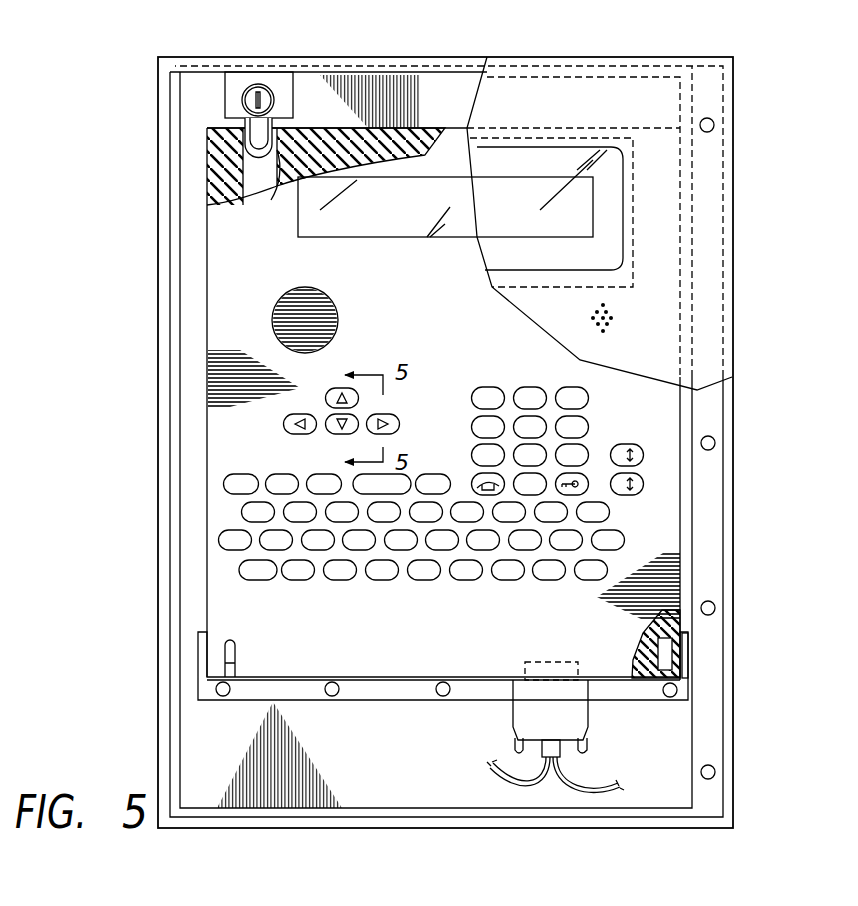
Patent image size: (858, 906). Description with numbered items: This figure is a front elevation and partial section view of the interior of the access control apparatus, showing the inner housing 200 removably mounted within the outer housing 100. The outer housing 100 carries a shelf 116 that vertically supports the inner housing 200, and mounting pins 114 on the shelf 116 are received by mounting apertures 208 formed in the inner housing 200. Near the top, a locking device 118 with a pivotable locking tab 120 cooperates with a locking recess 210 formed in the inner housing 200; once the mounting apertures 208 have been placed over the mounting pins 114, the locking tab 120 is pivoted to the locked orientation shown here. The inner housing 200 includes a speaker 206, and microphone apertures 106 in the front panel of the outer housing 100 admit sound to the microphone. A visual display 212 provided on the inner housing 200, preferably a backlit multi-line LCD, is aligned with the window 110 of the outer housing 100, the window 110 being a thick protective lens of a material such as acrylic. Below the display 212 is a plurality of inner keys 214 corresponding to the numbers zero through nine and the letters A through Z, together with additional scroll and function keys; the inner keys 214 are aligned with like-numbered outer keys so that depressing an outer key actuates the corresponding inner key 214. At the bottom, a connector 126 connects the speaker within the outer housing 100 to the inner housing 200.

The outer housing 100 is at (735, 127).
The microphone apertures 106 is at (611, 317).
The window 110 is at (623, 208).
The mounting pins 114 is at (663, 668).
The shelf 116 is at (385, 692).
The locking device 118 is at (285, 82).
The locking tab 120 is at (250, 126).
The connector 126 is at (592, 708).
The inner housing 200 is at (222, 418).
The speaker 206 is at (270, 318).
The mounting apertures 208 is at (682, 645).
The locking recess 210 is at (216, 215).
The visual display 212 is at (320, 222).
The inner keys 214 is at (406, 591).